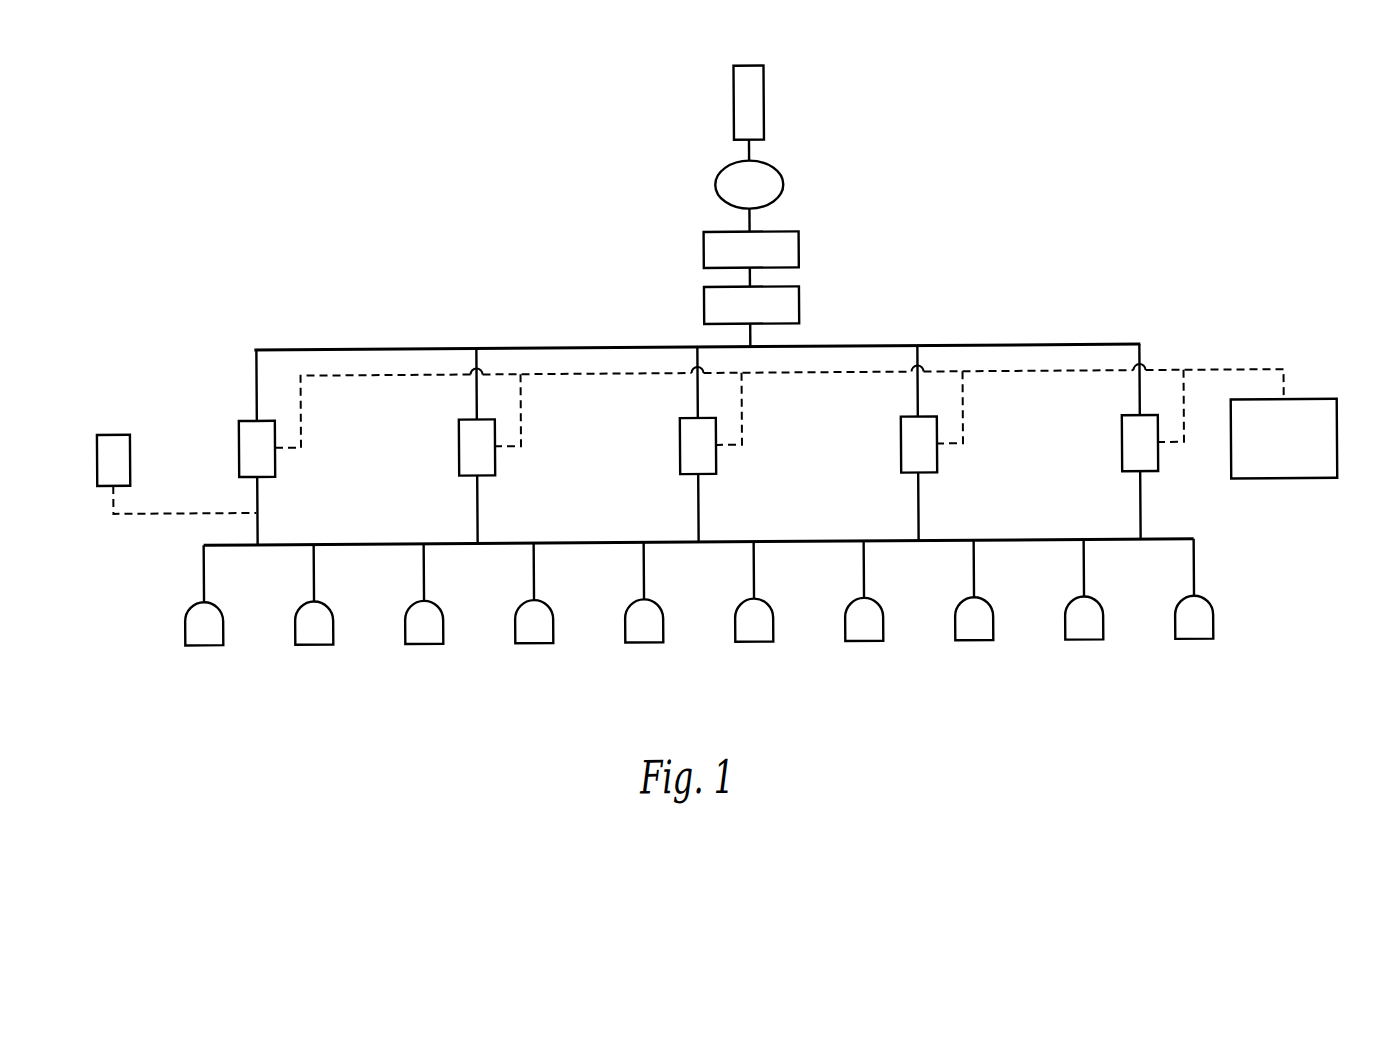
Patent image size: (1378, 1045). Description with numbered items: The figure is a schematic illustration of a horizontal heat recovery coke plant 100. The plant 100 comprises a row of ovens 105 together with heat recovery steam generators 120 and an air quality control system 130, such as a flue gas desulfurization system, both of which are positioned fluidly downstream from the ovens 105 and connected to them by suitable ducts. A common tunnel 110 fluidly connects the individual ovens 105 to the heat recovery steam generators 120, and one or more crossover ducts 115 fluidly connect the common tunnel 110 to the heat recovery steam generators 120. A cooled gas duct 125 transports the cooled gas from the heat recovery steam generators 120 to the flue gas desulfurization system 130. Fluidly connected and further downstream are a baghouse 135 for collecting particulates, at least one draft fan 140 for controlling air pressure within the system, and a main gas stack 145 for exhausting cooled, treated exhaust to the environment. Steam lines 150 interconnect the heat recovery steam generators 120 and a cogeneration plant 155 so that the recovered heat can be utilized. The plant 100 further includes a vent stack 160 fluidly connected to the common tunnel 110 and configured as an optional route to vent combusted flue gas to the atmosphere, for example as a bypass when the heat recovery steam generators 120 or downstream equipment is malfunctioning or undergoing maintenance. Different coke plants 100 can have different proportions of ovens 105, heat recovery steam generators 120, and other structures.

The horizontal heat recovery coke plant 100 is at (455, 177).
The ovens 105 is at (203, 643).
The common tunnel 110 is at (548, 541).
The crossover ducts 115 is at (256, 498).
The heat recovery steam generators 120 is at (238, 445).
The cooled gas duct 125 is at (565, 346).
The air quality control system 130 is at (800, 306).
The baghouse 135 is at (800, 251).
The draft fan 140 is at (785, 186).
The main gas stack 145 is at (766, 108).
The steam lines 150 is at (397, 370).
The cogeneration plant 155 is at (1303, 402).
The vent stack 160 is at (110, 430).